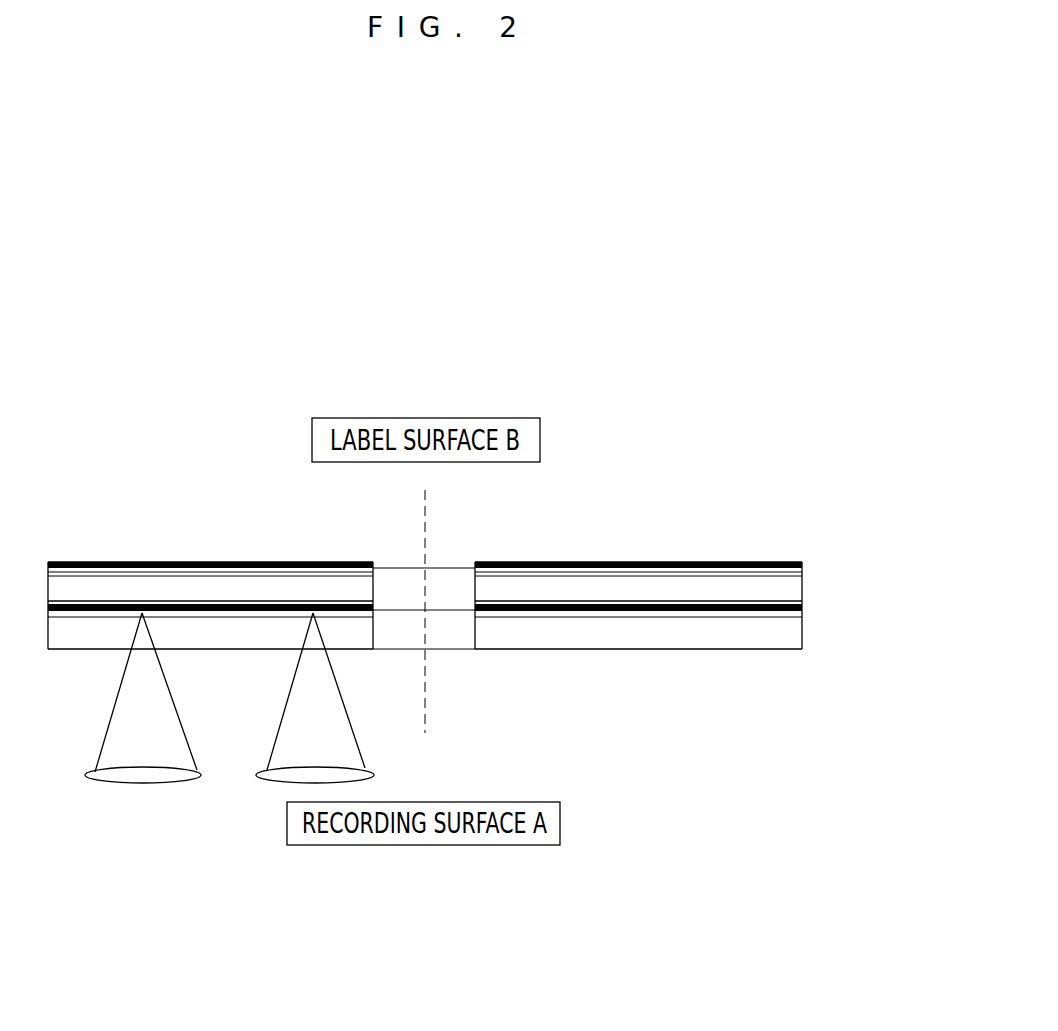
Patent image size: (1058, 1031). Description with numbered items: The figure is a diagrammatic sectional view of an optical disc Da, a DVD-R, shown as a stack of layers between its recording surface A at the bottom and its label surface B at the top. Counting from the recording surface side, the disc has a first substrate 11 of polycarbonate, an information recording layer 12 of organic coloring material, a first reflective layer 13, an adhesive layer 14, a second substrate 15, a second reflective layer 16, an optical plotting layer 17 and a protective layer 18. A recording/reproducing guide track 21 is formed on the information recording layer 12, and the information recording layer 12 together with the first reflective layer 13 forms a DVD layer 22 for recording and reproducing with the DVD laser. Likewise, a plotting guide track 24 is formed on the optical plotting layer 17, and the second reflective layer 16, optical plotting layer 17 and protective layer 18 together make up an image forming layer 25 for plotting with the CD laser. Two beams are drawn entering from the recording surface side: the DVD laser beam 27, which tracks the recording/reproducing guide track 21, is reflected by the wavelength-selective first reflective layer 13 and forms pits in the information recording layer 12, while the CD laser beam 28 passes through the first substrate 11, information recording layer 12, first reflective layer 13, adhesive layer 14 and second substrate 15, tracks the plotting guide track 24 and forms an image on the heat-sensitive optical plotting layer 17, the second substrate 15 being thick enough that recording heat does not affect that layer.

The first substrate 11 is at (702, 637).
The information recording layer 12 is at (802, 614).
The first reflective layer 13 is at (802, 608).
The adhesive layer 14 is at (802, 602).
The second substrate 15 is at (792, 585).
The second reflective layer 16 is at (802, 572).
The optical plotting layer 17 is at (800, 567).
The protective layer 18 is at (760, 560).
The recording/reproducing guide track 21 is at (625, 627).
The DVD layer 22 is at (880, 622).
The plotting guide track 24 is at (623, 585).
The image forming layer 25 is at (883, 493).
The DVD laser beam 27 is at (117, 705).
The CD laser beam 28 is at (280, 700).
The optical disc Da is at (500, 390).